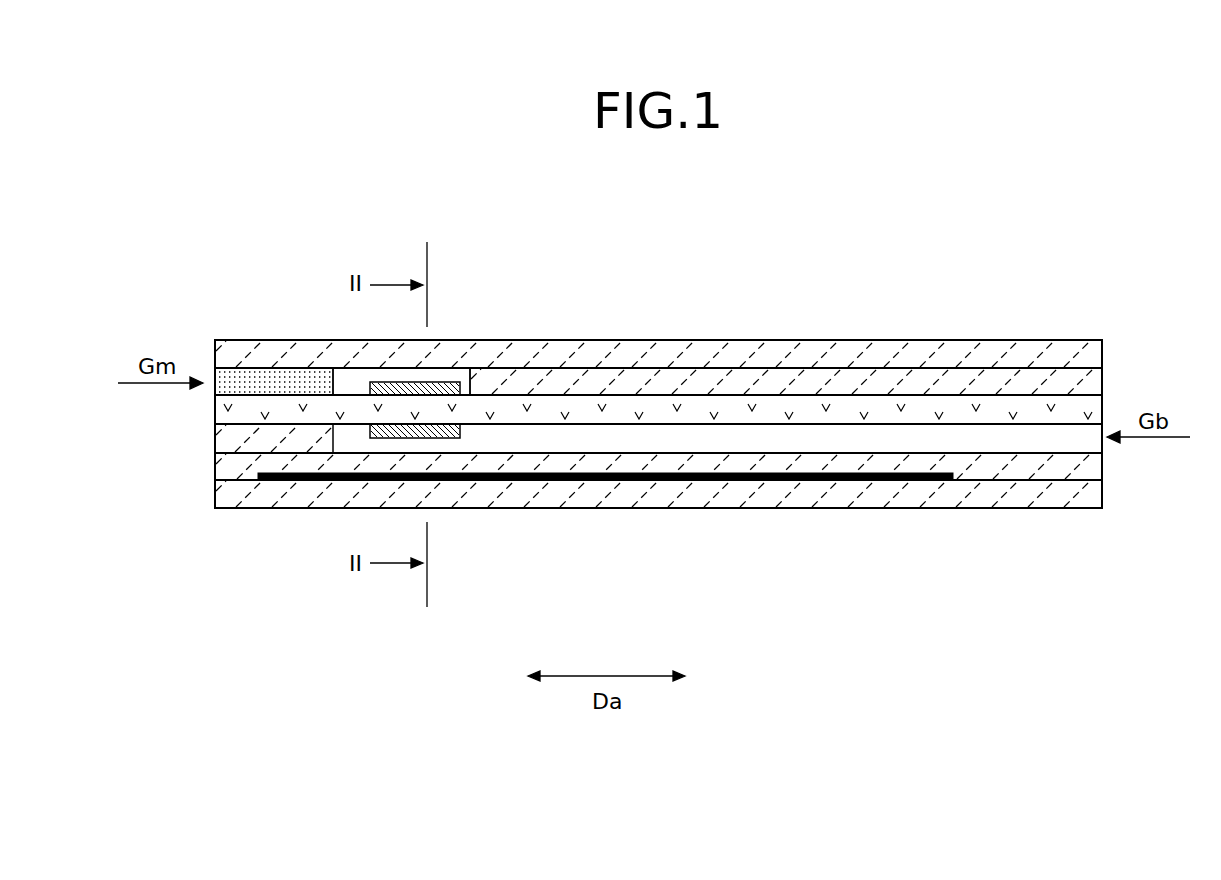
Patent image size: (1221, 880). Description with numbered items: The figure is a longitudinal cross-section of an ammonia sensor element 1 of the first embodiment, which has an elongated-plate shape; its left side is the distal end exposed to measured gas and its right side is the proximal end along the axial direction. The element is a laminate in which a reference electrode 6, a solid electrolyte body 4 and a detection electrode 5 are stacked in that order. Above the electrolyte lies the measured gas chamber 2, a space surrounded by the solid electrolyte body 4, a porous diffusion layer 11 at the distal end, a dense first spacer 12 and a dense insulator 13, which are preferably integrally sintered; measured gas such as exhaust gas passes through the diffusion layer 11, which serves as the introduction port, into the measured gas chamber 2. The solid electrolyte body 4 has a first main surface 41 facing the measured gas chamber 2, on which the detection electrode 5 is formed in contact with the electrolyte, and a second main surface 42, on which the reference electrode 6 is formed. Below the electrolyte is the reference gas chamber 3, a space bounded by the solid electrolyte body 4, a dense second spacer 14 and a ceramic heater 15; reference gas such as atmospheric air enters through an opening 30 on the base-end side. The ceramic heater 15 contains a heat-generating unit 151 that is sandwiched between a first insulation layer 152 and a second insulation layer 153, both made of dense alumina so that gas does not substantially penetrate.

The ammonia sensor element 1 is at (828, 263).
The measured gas chamber 2 is at (427, 373).
The reference gas chamber 3 is at (673, 437).
The solid electrolyte body 4 is at (698, 405).
The detection electrode 5 is at (447, 385).
The reference electrode 6 is at (385, 438).
The diffusion layer 11 is at (255, 380).
The first spacer 12 is at (908, 380).
The insulator 13 is at (595, 353).
The second spacer 14 is at (230, 434).
The ceramic heater 15 is at (658, 564).
The opening 30 is at (1105, 443).
The first main surface 41 is at (350, 392).
The second main surface 42 is at (585, 427).
The heat-generating unit 151 is at (822, 483).
The first insulation layer 152 is at (990, 615).
The second insulation layer 153 is at (983, 460).